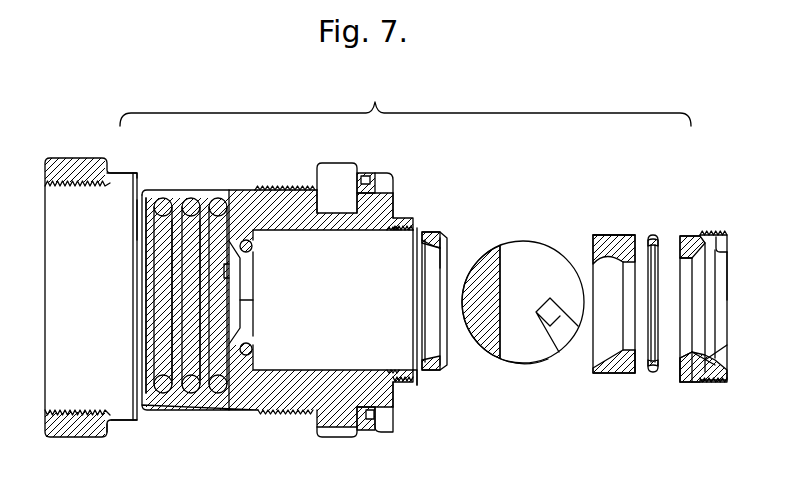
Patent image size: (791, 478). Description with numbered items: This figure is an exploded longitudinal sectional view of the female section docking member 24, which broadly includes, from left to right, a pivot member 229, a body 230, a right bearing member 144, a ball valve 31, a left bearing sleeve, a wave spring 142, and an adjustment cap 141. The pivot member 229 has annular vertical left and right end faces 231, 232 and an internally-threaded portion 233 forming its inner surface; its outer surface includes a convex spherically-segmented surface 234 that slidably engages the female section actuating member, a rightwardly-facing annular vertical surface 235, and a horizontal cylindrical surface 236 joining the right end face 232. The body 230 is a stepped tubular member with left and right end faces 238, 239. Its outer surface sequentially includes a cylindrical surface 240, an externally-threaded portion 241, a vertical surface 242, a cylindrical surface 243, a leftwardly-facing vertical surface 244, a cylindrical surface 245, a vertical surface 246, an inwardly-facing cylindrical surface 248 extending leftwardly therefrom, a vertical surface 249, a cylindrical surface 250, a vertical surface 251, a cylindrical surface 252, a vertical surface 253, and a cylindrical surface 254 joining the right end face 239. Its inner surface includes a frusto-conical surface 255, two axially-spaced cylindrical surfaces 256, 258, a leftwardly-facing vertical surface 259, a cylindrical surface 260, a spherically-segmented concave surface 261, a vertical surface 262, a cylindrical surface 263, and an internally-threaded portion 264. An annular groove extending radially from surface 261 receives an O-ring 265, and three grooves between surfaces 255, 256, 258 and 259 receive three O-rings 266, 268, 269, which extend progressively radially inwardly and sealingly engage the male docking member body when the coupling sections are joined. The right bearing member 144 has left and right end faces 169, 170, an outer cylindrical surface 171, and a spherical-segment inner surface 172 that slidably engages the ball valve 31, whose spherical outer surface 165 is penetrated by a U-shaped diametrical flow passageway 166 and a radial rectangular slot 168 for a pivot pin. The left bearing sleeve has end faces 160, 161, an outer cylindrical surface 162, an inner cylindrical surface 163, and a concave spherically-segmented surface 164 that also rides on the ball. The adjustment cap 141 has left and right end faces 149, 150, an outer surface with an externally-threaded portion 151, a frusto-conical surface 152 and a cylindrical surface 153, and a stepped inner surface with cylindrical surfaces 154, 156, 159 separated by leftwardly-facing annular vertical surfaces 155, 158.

The female section docking member 24 is at (405, 103).
The pivot member 229 is at (93, 137).
The left end face 231 is at (58, 156).
The right end face 232 is at (137, 172).
The internally-threaded portion 233 is at (90, 190).
The outwardly-facing convex spherically-segmented surface 234 is at (78, 438).
The rightwardly-facing annular vertical surface 235 is at (103, 438).
The outwardly-facing horizontal cylindrical surface 236 is at (120, 424).
The left end face 238 is at (140, 224).
The body 230 is at (279, 308).
The outwardly-facing horizontal cylindrical surface 240 is at (182, 192).
The O-ring 266 is at (162, 197).
The O-ring 268 is at (193, 197).
The O-ring 269 is at (220, 197).
The leftwardly- and inwardly-facing frusto-conical surface 255 is at (152, 251).
The inwardly-facing horizontal cylindrical surface 256 is at (180, 264).
The inwardly-facing horizontal cylindrical surface 258 is at (208, 285).
The externally-threaded portion 241 is at (278, 188).
The rightwardly-facing annular vertical surface 242 is at (313, 188).
The outwardly-facing horizontal cylindrical surface 243 is at (324, 396).
The leftwardly-facing annular vertical surface 244 is at (336, 180).
The outwardly-facing horizontal cylindrical surface 245 is at (364, 428).
The rightwardly-facing annular vertical surface 246 is at (366, 175).
The inwardly-facing horizontal cylindrical surface 248 is at (372, 432).
The rightwardly-facing annular vertical surface 249 is at (388, 183).
The outwardly-facing horizontal cylindrical surface 250 is at (386, 425).
The rightwardly-facing annular vertical surface 251 is at (396, 200).
The outwardly-facing horizontal cylindrical surface 252 is at (395, 400).
The rightwardly-facing annular vertical surface 253 is at (403, 227).
The outwardly-facing horizontal cylindrical surface 254 is at (405, 384).
The right end face 239 is at (418, 374).
The internally-threaded portion 264 is at (394, 368).
The O-ring 265 is at (256, 248).
The inwardly-facing horizontal cylindrical surface 263 is at (256, 362).
The leftwardly-facing annular vertical surface 259 is at (242, 284).
The inwardly-facing horizontal cylindrical surface 260 is at (236, 272).
The rightwardly- and inwardly-facing spherically-segmented concave surface 261 is at (251, 322).
The rightwardly-facing annular vertical surface 262 is at (241, 330).
The right bearing member 144 is at (458, 222).
The outwardly-facing horizontal cylindrical surface 171 is at (446, 233).
The right end face 170 is at (428, 246).
The inner surface 172 is at (440, 262).
The left end face 169 is at (447, 372).
The ball valve 31 is at (520, 232).
The spherical outer surface 165 is at (483, 360).
The U-shaped diametrical flow passageway 166 is at (526, 362).
The radially-extending rectangular slot 168 is at (542, 330).
The right end face 161 is at (597, 374).
The outwardly-facing horizontal cylindrical surface 162 is at (613, 374).
The inwardly-facing horizontal cylindrical surface 163 is at (596, 258).
The annular concave spherically-segmented surface 164 is at (598, 236).
The left end face 160 is at (633, 375).
The wave spring 142 is at (651, 227).
The adjustment cap 141 is at (712, 203).
The inwardly-facing horizontal cylindrical surface 156 is at (696, 236).
The inwardly-facing horizontal cylindrical surface 159 is at (682, 262).
The inwardly-facing horizontal cylindrical surface 154 is at (724, 238).
The left end face 149 is at (727, 278).
The leftwardly-facing annular vertical surface 158 is at (716, 348).
The leftwardly-facing annular vertical surface 155 is at (705, 362).
The externally-threaded portion 151 is at (706, 382).
The rightwardly- and outwardly-facing frusto-conical surface 152 is at (698, 385).
The outwardly-facing horizontal cylindrical surface 153 is at (690, 386).
The right end face 150 is at (680, 382).